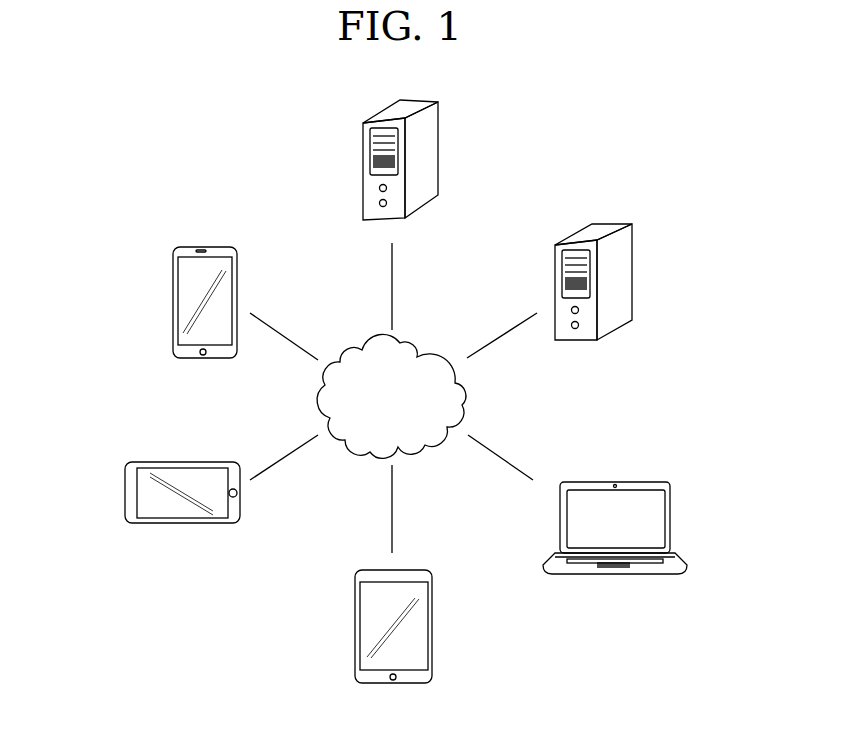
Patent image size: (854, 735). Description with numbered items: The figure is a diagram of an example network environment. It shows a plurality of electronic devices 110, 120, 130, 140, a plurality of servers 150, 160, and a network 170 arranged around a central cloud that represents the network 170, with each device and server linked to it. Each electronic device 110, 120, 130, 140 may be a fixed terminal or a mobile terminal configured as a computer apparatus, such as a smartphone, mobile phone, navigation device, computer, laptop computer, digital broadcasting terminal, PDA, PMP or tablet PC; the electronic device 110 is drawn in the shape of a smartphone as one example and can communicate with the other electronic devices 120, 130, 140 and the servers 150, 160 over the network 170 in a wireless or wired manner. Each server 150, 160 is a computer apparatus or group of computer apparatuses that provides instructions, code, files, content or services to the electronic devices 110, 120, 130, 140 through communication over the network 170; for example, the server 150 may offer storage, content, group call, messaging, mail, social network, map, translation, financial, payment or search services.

The electronic device 110 is at (173, 301).
The electronic device 120 is at (125, 490).
The electronic device 130 is at (432, 625).
The electronic device 140 is at (670, 520).
The server 150 is at (632, 270).
The server 160 is at (438, 150).
The network 170 is at (417, 356).